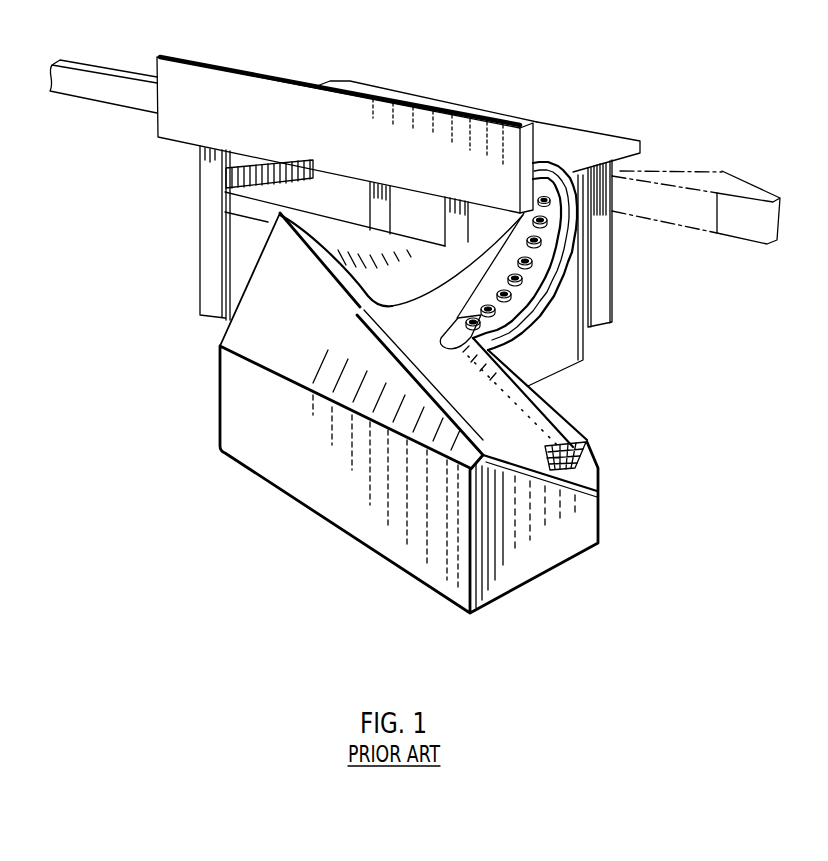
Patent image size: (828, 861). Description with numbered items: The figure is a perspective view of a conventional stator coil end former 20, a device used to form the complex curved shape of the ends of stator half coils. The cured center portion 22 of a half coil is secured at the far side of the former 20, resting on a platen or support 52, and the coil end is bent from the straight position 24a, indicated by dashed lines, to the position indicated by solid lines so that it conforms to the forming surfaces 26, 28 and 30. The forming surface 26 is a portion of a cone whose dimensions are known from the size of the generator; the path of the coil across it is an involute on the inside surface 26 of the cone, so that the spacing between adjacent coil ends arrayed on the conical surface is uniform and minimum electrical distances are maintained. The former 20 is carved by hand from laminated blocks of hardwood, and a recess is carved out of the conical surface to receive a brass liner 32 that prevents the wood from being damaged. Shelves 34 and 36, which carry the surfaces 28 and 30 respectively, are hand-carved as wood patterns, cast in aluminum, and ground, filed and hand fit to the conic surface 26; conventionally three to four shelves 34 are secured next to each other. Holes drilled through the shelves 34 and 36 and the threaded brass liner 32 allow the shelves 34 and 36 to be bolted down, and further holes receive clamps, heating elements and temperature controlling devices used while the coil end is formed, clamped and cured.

The stator coil former 20 is at (376, 533).
The cured center portion 22 is at (105, 62).
The straight position 24a is at (673, 181).
The forming surface 26 is at (358, 310).
The forming surface 28 is at (540, 273).
The forming surface 30 is at (553, 407).
The brass liner 32 is at (573, 495).
The shelves 34 is at (500, 282).
The shelf 36 is at (588, 465).
The stator coil center and cell bend forming section support 52 is at (203, 60).